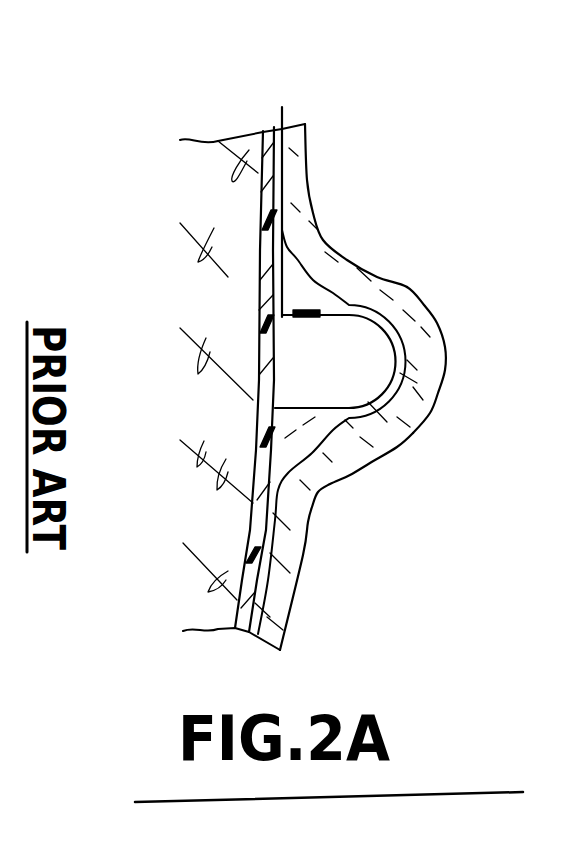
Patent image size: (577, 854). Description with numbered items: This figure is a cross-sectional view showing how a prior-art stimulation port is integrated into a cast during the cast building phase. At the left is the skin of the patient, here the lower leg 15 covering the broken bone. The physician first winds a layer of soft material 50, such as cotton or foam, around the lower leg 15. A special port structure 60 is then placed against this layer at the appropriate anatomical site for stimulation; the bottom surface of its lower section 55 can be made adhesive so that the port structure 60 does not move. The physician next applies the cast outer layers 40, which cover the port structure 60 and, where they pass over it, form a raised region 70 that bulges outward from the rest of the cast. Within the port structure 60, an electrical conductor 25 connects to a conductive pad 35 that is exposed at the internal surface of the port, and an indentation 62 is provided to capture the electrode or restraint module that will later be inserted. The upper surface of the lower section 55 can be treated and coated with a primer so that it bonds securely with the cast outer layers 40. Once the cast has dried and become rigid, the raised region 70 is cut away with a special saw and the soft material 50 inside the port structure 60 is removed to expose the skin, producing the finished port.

The lower leg 15 is at (220, 316).
The electrical conductor 25 is at (285, 115).
The conductive pad 35 is at (303, 318).
The cast outer layers 40 is at (355, 257).
The soft material 50 is at (260, 196).
The lower section 55 is at (262, 468).
The port structure 60 is at (317, 433).
The indentation 62 is at (338, 310).
The raised region 70 is at (437, 307).